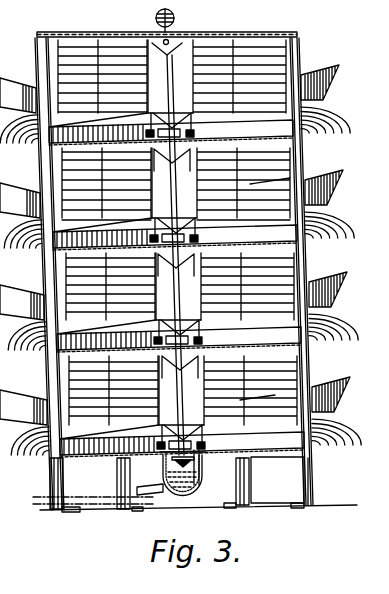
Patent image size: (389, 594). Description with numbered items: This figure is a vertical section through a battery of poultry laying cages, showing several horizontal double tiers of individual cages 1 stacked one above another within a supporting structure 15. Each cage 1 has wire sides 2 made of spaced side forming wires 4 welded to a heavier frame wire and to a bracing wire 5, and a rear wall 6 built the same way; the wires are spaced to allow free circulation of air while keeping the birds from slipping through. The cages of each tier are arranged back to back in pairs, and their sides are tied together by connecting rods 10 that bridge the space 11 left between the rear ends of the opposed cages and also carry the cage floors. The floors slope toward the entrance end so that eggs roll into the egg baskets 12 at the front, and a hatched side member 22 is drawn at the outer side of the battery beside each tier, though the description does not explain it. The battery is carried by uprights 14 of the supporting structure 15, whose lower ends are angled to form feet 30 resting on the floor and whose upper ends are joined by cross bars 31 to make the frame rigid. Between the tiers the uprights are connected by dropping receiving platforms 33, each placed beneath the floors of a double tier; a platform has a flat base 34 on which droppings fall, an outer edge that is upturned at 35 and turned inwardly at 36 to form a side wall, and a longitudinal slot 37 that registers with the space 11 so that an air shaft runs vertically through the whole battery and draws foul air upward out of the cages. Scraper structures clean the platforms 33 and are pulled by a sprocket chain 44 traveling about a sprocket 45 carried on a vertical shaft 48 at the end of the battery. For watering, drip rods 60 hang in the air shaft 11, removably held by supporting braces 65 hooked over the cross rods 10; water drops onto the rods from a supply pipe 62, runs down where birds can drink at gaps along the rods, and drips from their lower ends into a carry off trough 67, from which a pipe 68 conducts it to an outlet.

The individual cage 1 is at (77, 73).
The side 2 is at (304, 279).
The side forming wire 4 is at (257, 397).
The bracing wire 5 is at (272, 183).
The rear wall 6 is at (345, 452).
The connecting rod 10 is at (304, 297).
The space 11 is at (189, 253).
The egg basket 12 is at (323, 103).
The upright 14 is at (37, 58).
The supporting structure 15 is at (254, 482).
The hatched bracket 22 is at (312, 64).
The foot 30 is at (301, 504).
The cross bar 31 is at (82, 34).
The dropping receiving platform 33 is at (305, 147).
The flat base 34 is at (89, 457).
The upturned outer edge 35 is at (300, 126).
The inturned edge portion 36 is at (329, 84).
The slot 37 is at (164, 317).
The sprocket chain 44 is at (150, 151).
The sprocket 45 is at (186, 154).
The vertical shaft 48 is at (190, 366).
The drip rod 60 is at (172, 78).
The supply pipe 62 is at (178, 19).
The supporting brace 65 is at (161, 47).
The carry off trough 67 is at (194, 500).
The pipe 68 is at (160, 494).